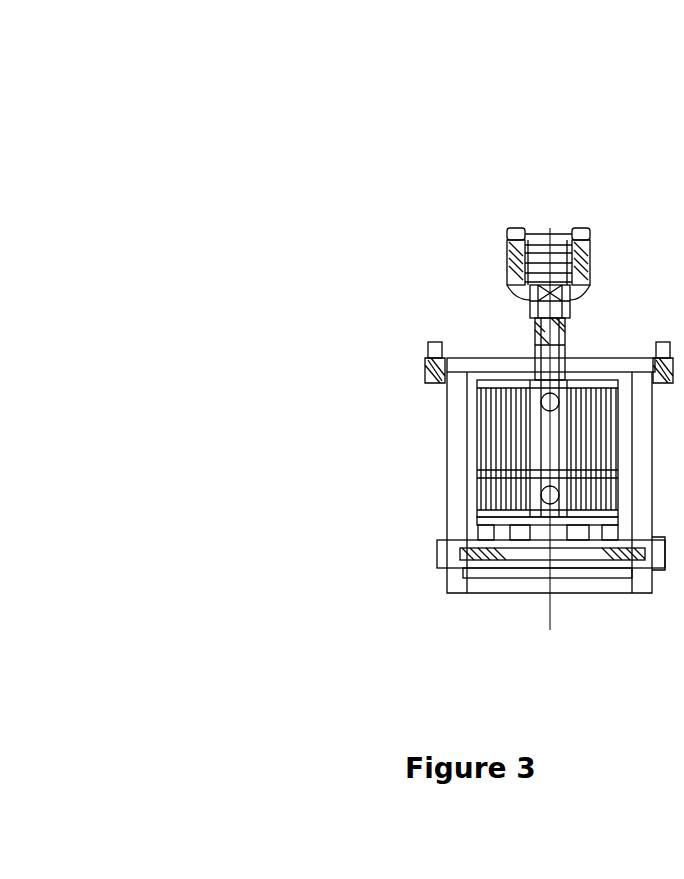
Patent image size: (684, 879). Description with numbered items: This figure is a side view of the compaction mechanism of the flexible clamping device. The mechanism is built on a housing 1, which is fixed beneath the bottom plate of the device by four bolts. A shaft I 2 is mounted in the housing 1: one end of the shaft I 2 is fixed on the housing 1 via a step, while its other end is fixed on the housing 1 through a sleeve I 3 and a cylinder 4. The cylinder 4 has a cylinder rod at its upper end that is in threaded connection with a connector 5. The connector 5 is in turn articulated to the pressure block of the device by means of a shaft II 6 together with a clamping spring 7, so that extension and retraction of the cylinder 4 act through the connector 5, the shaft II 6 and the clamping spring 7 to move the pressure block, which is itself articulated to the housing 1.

The housing 1 is at (443, 590).
The shaft I 2 is at (433, 550).
The sleeve I 3 is at (480, 538).
The cylinder 4 is at (480, 455).
The connector 5 is at (513, 293).
The shaft II 6 is at (503, 253).
The clamping spring 7 is at (503, 237).